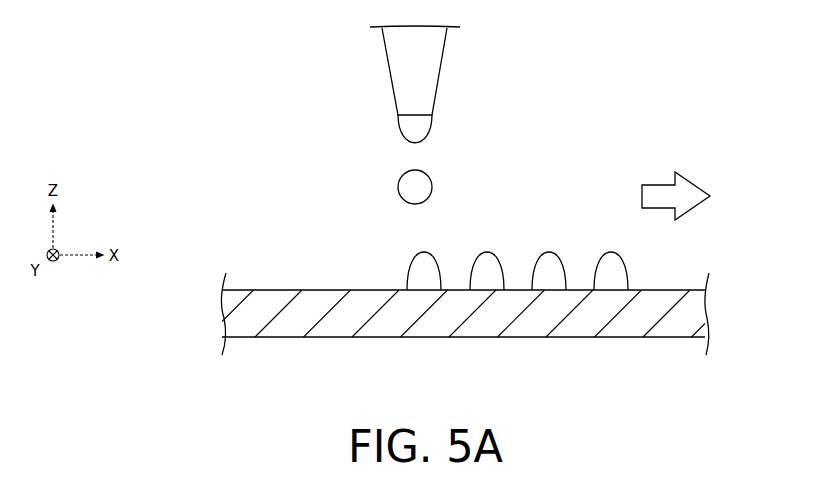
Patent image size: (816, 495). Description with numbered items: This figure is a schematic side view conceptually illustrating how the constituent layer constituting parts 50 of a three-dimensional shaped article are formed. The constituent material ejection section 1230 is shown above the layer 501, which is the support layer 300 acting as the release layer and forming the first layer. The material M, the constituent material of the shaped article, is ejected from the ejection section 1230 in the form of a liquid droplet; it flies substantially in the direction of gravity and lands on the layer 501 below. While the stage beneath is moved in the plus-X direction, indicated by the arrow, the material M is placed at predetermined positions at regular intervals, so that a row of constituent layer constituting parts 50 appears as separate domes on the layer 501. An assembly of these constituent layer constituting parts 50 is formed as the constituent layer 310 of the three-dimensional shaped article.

The constituent material ejection section 1230 is at (430, 48).
The material M is at (415, 182).
The constituent layer constituting parts 50 is at (517, 237).
The constituent layer 310 is at (548, 250).
The layer 501 is at (447, 279).
The support layer 300 is at (270, 290).